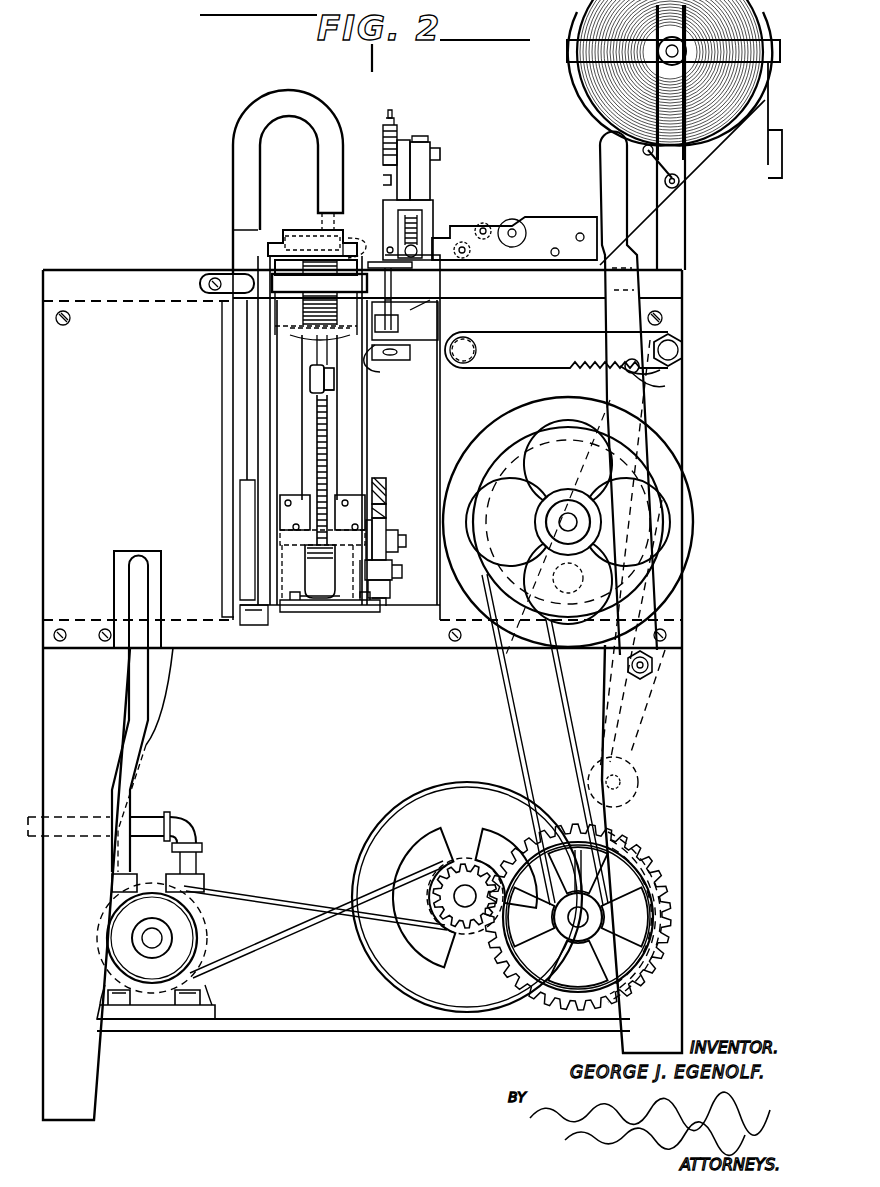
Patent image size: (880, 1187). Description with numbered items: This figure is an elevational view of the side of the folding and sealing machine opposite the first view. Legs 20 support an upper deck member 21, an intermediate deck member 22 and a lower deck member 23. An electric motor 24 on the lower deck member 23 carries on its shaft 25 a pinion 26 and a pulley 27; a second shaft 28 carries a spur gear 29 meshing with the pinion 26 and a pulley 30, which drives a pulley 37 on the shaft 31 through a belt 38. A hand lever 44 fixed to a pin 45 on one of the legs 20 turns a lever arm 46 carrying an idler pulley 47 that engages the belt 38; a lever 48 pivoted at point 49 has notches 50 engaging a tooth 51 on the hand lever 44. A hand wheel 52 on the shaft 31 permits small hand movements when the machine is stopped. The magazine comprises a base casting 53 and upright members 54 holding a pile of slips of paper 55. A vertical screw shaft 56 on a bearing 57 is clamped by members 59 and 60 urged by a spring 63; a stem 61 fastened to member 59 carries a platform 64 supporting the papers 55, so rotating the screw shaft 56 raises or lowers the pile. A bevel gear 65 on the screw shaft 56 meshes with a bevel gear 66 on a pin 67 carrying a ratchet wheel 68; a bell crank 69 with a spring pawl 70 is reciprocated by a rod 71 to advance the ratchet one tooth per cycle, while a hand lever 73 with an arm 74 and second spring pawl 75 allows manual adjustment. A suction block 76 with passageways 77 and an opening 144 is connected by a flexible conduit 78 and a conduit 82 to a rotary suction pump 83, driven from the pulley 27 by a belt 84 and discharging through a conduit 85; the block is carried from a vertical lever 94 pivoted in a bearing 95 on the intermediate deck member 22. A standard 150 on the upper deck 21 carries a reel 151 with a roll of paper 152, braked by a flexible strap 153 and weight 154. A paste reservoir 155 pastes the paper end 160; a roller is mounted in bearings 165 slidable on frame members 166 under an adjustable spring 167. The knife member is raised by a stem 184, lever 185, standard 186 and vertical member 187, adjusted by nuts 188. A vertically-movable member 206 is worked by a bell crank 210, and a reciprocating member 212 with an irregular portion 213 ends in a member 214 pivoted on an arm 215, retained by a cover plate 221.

The legs 20 is at (55, 725).
The upper deck member 21 is at (135, 270).
The intermediate deck member 22 is at (330, 650).
The lower deck member 23 is at (280, 1031).
The electric motor 24 is at (460, 790).
The shaft 25 is at (465, 885).
The pinion 26 is at (455, 922).
The pulley 27 is at (450, 880).
The second shaft 28 is at (575, 925).
The spur gear 29 is at (515, 1008).
The pulley 30 is at (585, 950).
The shaft 31 is at (568, 500).
The pulley 37 is at (565, 600).
The belt 38 is at (515, 700).
The hand lever 44 is at (640, 300).
The pin 45 is at (655, 665).
The lever arm 46 is at (645, 715).
The idler pulley 47 is at (640, 782).
The lever 48 is at (515, 332).
The pivot point 49 is at (690, 345).
The notches 50 is at (655, 372).
The tooth 51 is at (665, 386).
The hand wheel 52 is at (690, 500).
The base casting 53 is at (330, 613).
The upright members 54 is at (280, 410).
The slips of paper 55 is at (302, 305).
The vertical screw shaft 56 is at (318, 445).
The bearing 57 is at (315, 538).
The clamping member 59 is at (312, 378).
The clamping member 60 is at (334, 378).
The stem 61 is at (317, 350).
The spring 63 is at (330, 392).
The platform 64 is at (300, 335).
The bevel gear 65 is at (310, 565).
The bevel gear 66 is at (325, 598).
The pin 67 is at (398, 572).
The ratchet wheel 68 is at (370, 598).
The bell crank 69 is at (385, 590).
The spring pawl 70 is at (382, 596).
The rod 71 is at (398, 545).
The hand lever 73 is at (380, 485).
The arm 74 is at (386, 512).
The second spring pawl 75 is at (378, 528).
The suction block 76 is at (345, 230).
The passageways 77 is at (367, 230).
The flexible conduit 78 is at (320, 120).
The conduit 82 is at (143, 695).
The rotary suction pump 83 is at (150, 886).
The belt 84 is at (262, 885).
The conduit 85 is at (160, 815).
The vertical lever 94 is at (260, 432).
The bearing 95 is at (252, 625).
The opening 144 is at (310, 240).
The standard 150 is at (685, 212).
The reel 151 is at (585, 50).
The roll of paper 152 is at (598, 90).
The flexible strap 153 is at (590, 110).
The weight 154 is at (782, 165).
The paste reservoir 155 is at (565, 230).
The end of the paper 160 is at (705, 160).
The bearings 165 is at (415, 250).
The frame members 166 is at (420, 215).
The adjustable spring 167 is at (432, 215).
The stem 184 is at (390, 118).
The lever 185 is at (405, 145).
The standard 186 is at (425, 150).
The vertical member 187 is at (420, 136).
The nuts 188 is at (383, 150).
The vertically-movable member 206 is at (395, 360).
The bell crank 210 is at (420, 350).
The reciprocating member 212 is at (391, 278).
The irregularly-shaped portion 213 is at (391, 300).
The member 214 is at (405, 330).
The arm 215 is at (420, 305).
The cover plate 221 is at (400, 265).